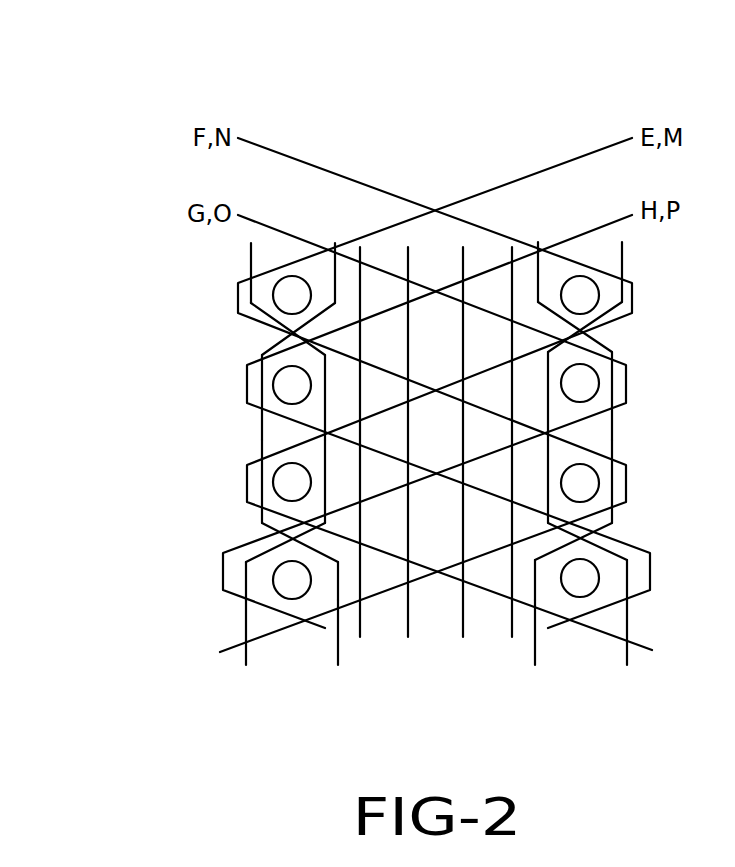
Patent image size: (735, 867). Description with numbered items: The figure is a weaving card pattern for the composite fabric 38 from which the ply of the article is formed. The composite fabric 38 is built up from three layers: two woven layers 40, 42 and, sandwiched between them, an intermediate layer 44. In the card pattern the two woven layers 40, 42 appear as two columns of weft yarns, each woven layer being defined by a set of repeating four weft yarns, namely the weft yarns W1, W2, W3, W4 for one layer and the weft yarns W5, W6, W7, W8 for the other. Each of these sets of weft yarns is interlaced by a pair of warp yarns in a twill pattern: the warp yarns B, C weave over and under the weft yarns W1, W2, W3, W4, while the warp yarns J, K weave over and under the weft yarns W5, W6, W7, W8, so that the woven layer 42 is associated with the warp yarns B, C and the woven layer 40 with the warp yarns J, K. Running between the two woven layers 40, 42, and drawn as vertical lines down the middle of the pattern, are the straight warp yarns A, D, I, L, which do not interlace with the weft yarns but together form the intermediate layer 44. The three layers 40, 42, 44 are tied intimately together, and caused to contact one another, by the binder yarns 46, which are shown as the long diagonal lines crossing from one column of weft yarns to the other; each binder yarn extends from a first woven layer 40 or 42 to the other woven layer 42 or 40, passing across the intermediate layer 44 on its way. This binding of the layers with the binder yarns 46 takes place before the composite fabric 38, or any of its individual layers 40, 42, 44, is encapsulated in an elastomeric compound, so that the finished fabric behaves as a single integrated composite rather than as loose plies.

The composite fabric 38 is at (441, 137).
The binder yarns 46 is at (553, 165).
The woven layer 40 is at (295, 679).
The woven layer 42 is at (580, 679).
The intermediate layer 44 is at (436, 484).
The weft yarn W1 is at (598, 584).
The weft yarn W2 is at (598, 489).
The weft yarn W3 is at (598, 390).
The weft yarn W4 is at (598, 302).
The weft yarn W5 is at (274, 586).
The weft yarn W6 is at (274, 489).
The weft yarn W7 is at (274, 393).
The weft yarn W8 is at (274, 302).
The straight warp yarn A is at (512, 458).
The warp yarn B is at (537, 649).
The warp yarn C is at (629, 649).
The straight warp yarn D is at (360, 458).
The straight warp yarn I is at (408, 458).
The warp yarn J is at (243, 649).
The warp yarn K is at (339, 649).
The straight warp yarn L is at (464, 458).